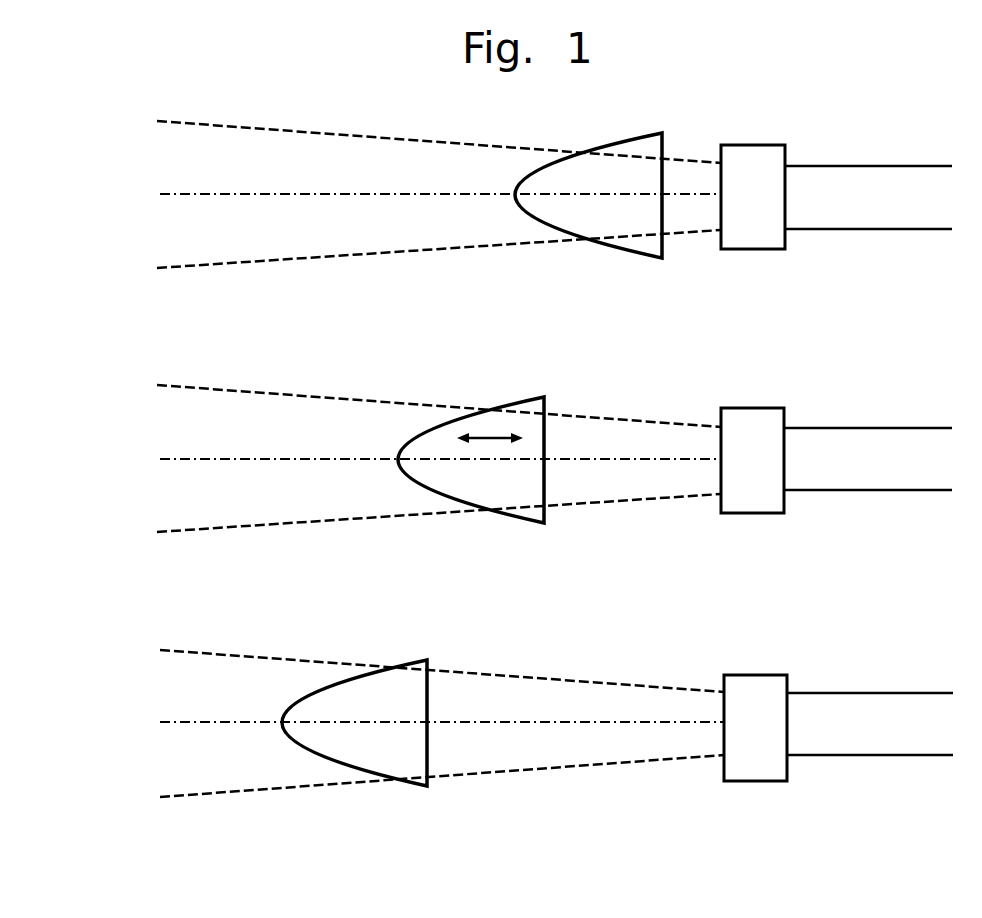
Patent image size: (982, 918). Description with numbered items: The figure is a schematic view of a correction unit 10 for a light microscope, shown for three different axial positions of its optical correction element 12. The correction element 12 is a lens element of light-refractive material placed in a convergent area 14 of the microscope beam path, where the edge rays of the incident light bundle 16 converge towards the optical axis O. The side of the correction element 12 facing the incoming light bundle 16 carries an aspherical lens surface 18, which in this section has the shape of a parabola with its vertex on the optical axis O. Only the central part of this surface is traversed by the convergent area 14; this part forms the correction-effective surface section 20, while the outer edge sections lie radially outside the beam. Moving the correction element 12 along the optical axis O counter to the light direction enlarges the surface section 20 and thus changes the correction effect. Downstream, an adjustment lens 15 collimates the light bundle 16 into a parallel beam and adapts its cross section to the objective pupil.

The correction unit 10 is at (482, 466).
The optical correction element 12 is at (583, 138).
The convergent area of the microscope beam path 14 is at (400, 253).
The adjustment lens 15 is at (780, 250).
The light bundle 16 is at (305, 250).
The aspherical lens surface 18 is at (619, 254).
The correction-effective surface section 20 is at (518, 220).
The optical axis O is at (302, 194).